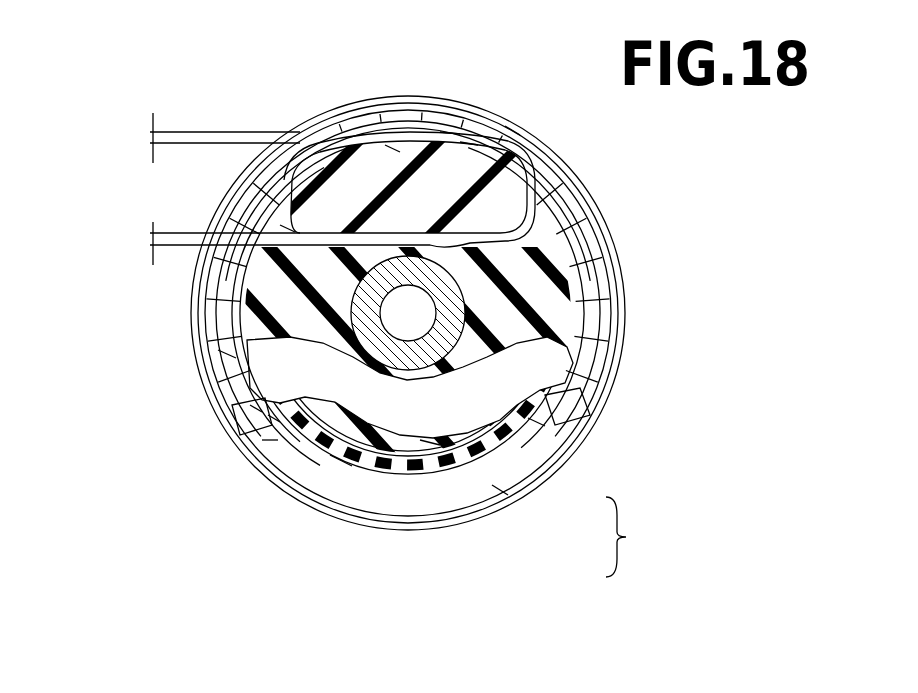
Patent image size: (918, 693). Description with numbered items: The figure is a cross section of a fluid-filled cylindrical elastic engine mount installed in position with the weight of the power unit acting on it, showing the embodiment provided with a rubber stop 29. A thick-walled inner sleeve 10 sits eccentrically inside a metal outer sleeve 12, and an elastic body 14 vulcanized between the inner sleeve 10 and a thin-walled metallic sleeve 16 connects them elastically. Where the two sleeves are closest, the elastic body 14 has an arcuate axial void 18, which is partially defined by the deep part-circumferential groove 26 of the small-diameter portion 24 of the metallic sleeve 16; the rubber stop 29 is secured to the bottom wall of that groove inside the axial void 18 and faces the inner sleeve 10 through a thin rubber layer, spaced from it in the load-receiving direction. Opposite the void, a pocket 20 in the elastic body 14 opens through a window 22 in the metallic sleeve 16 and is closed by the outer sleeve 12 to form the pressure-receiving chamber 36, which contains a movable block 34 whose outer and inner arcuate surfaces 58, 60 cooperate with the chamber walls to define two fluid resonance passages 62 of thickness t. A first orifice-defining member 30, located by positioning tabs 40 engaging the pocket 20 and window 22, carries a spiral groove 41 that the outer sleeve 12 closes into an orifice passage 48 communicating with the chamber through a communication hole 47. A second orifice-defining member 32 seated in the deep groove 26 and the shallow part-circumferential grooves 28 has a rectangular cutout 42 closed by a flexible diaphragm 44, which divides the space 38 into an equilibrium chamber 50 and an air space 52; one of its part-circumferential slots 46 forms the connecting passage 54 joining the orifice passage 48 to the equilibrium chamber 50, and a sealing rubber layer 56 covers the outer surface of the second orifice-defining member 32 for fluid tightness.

The inner sleeve 10 is at (383, 305).
The outer sleeve 12 is at (578, 453).
The elastic body 14 is at (558, 318).
The metallic sleeve 16 is at (584, 360).
The axial void 18 is at (432, 416).
The pocket 20 is at (572, 228).
The window 22 is at (287, 227).
The small-diameter portion 24 is at (582, 286).
The deep part-circumferential groove 26 is at (443, 470).
The shallow part-circumferential grooves 28 is at (226, 312).
The rubber stop 29 is at (428, 442).
The first orifice-defining member 30 is at (543, 168).
The second orifice-defining member 32 is at (273, 418).
The movable block 34 is at (417, 150).
The pressure-receiving chamber 36 is at (287, 195).
The space 38 is at (631, 537).
The positioning tabs 40 is at (290, 210).
The spiral groove 41 is at (393, 150).
The rectangular cutout 42 is at (270, 436).
The flexible diaphragm 44 is at (350, 468).
The part-circumferential slots 46 is at (582, 400).
The communication hole 47 is at (513, 130).
The orifice passage 48 is at (450, 137).
The equilibrium chamber 50 is at (536, 423).
The air space 52 is at (500, 490).
The connecting passage 54 is at (226, 358).
The sealing rubber layer 56 is at (258, 408).
The outer arcuate surface 58 is at (468, 142).
The inner arcuate surface 60 is at (512, 277).
The fluid resonance passages 62 is at (300, 268).